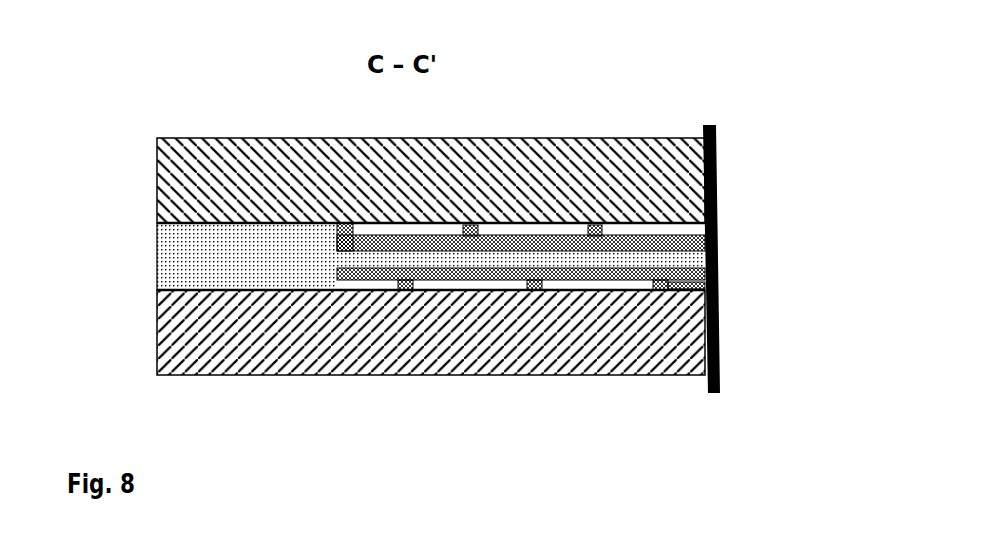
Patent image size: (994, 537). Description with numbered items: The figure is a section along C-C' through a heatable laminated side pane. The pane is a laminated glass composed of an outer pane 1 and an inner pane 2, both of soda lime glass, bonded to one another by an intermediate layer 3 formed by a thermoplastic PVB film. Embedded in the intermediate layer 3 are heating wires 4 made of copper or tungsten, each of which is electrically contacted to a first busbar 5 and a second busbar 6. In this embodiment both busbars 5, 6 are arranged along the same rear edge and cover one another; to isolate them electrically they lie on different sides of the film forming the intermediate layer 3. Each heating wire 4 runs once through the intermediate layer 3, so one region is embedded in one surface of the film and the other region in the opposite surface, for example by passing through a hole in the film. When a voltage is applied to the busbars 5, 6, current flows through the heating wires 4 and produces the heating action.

The outer pane 1 is at (178, 190).
The inner pane 2 is at (188, 346).
The intermediate layer 3 is at (180, 252).
The heating wire 4 is at (670, 285).
The first busbar 5 is at (627, 242).
The second busbar 6 is at (632, 282).